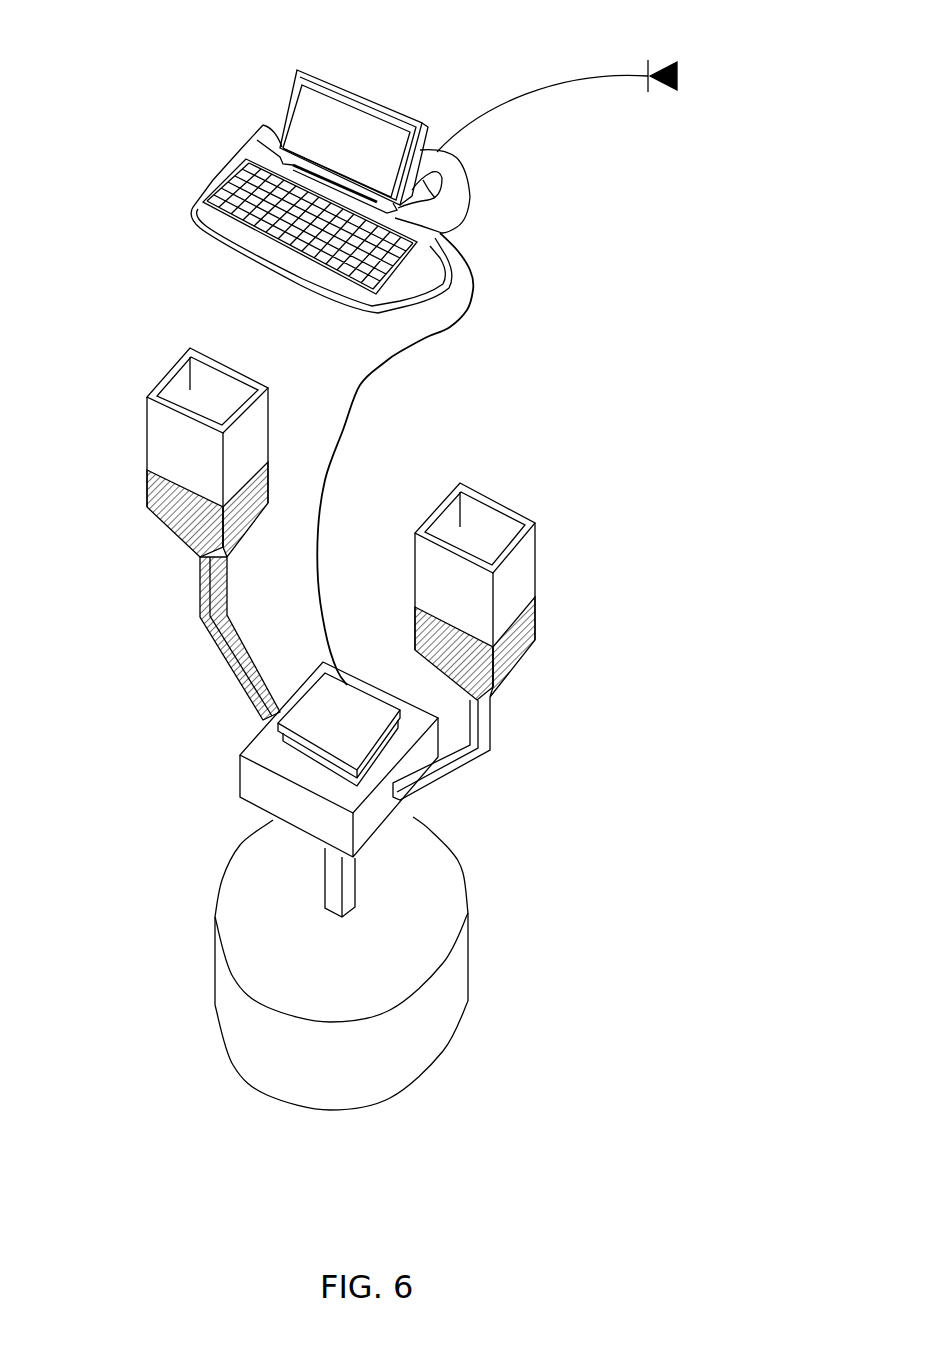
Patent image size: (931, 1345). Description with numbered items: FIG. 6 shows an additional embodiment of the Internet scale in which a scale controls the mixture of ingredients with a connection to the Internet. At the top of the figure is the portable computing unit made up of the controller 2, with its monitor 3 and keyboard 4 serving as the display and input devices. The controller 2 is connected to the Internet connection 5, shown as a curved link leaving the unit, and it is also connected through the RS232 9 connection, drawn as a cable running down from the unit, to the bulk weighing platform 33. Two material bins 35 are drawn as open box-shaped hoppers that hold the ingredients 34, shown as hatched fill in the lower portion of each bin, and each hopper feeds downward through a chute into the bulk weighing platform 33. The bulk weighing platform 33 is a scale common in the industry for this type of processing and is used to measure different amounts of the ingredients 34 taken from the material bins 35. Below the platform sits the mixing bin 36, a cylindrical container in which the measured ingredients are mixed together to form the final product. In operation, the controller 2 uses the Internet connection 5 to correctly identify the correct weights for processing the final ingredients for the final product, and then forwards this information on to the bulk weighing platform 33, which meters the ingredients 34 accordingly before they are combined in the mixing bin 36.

The controller 2 is at (442, 193).
The monitor 3 is at (383, 146).
The keyboard 4 is at (238, 217).
The Internet connection 5 is at (625, 75).
The RS232 connection 9 is at (343, 427).
The bulk weighing platform 33 is at (268, 798).
The ingredients 34 is at (185, 510).
The material bins 35 is at (183, 445).
The mixing bin 36 is at (273, 1038).